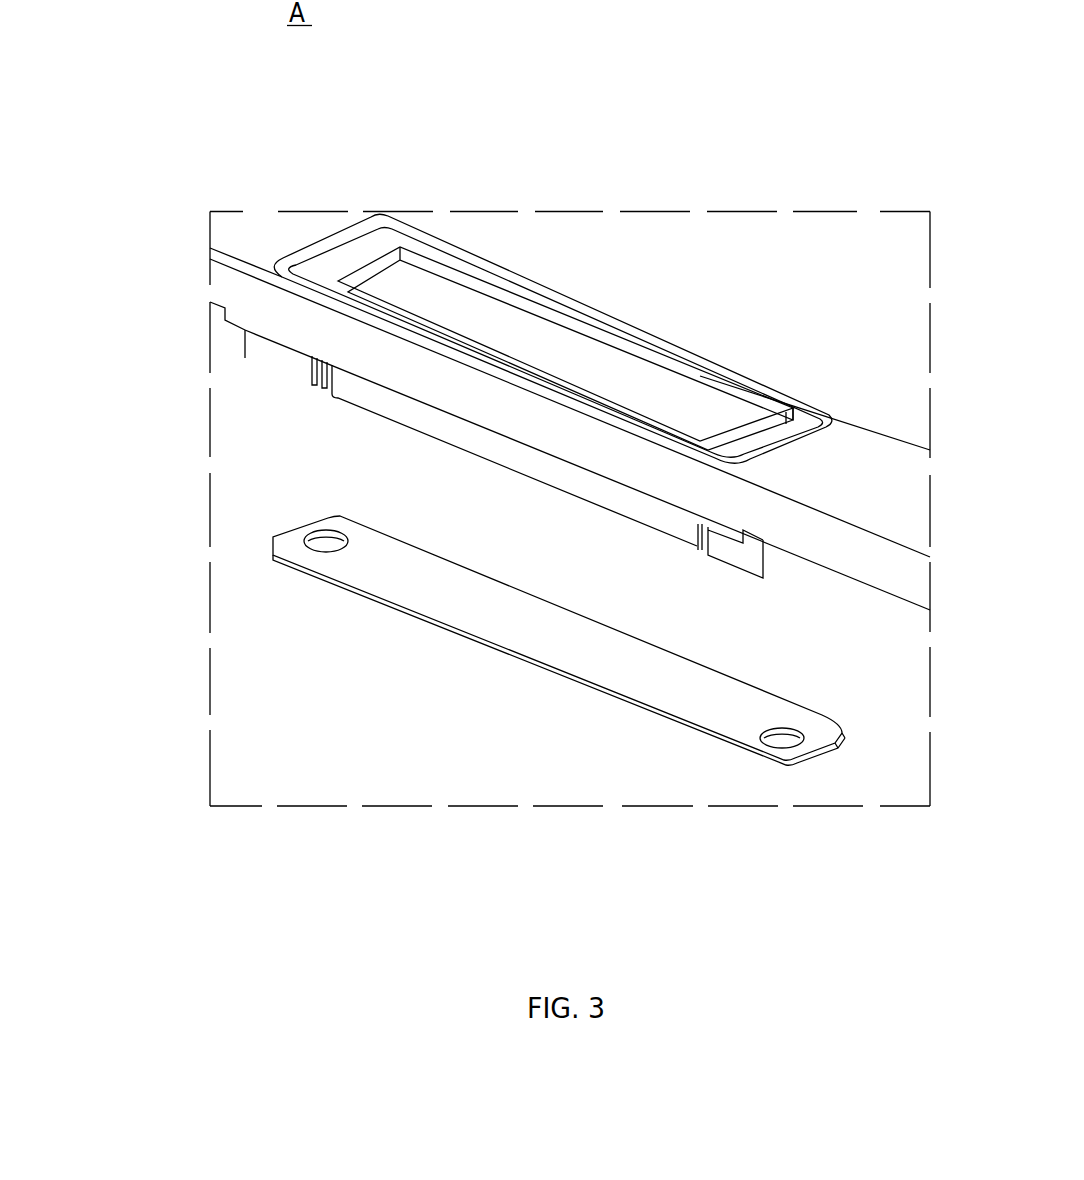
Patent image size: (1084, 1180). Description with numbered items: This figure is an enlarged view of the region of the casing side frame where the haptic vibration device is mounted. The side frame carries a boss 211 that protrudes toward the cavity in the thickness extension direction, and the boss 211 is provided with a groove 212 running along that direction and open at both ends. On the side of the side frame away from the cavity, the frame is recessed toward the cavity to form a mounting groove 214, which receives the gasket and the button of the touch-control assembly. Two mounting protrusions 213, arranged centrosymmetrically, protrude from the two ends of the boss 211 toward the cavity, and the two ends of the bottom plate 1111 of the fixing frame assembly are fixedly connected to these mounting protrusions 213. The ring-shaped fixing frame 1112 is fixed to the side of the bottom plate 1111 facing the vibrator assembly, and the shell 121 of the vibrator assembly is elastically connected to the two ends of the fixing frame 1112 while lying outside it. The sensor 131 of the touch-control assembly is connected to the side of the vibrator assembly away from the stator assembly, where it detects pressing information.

The mounting groove 214 is at (334, 258).
The groove 212 is at (329, 283).
The sensor 131 is at (500, 319).
The shell 121 is at (770, 413).
The boss 211 is at (238, 320).
The mounting protrusions 213 is at (282, 357).
The fixing frame 1112 is at (372, 398).
The bottom plate 1111 is at (423, 585).